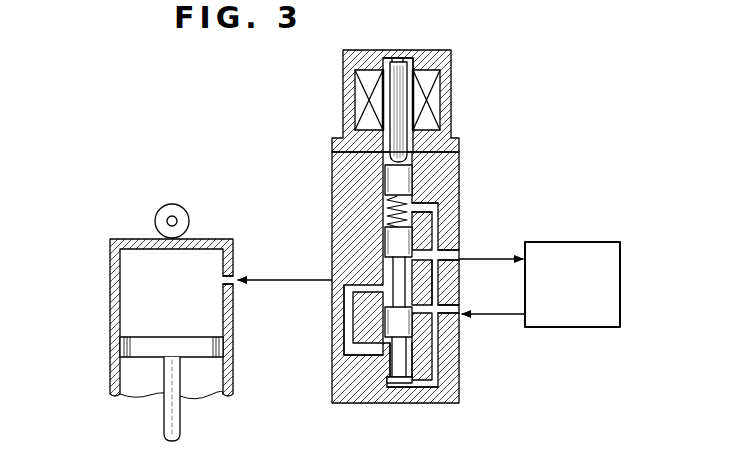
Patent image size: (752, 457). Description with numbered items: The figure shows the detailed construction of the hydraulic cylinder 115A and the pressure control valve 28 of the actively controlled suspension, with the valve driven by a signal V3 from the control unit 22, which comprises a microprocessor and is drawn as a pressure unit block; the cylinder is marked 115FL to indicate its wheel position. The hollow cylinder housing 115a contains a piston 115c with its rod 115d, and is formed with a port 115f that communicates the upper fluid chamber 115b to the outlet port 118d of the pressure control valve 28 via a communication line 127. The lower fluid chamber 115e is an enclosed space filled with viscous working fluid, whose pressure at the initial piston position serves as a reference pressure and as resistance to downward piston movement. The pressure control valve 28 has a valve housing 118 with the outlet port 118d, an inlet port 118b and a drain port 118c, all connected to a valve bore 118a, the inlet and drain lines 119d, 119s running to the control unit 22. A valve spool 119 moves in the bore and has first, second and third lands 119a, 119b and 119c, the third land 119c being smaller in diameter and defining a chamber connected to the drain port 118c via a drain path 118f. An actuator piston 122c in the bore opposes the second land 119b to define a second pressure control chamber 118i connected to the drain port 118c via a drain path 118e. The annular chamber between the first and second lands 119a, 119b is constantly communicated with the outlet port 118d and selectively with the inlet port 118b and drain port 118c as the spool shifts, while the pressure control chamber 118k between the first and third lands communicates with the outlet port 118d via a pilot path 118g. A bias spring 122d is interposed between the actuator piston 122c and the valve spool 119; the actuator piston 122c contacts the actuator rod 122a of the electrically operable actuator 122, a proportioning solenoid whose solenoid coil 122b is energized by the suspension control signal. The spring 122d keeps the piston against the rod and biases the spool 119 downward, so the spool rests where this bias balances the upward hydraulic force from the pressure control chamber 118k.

The control unit 22 is at (562, 242).
The pressure control valve 28 is at (466, 349).
The hollow cylinder housing 115a is at (115, 310).
The upper fluid chamber 115b is at (128, 272).
The hydraulic cylinder 115A is at (110, 347).
The piston 115c is at (218, 348).
The upper fluid chamber 115d is at (180, 420).
The lower fluid chamber 115e is at (128, 392).
The port 115f is at (236, 264).
The front-left / rear-right wheel cylinder 115FL is at (196, 209).
The valve housing 118 is at (335, 403).
The valve bore 118a is at (383, 186).
The inlet port 118b is at (447, 318).
The drain port 118c is at (458, 238).
The outlet port 118d is at (383, 262).
The drain path 118e is at (440, 207).
The drain path 118f is at (432, 399).
The pilot path 118g is at (363, 352).
The second pressure control chamber 118i is at (455, 176).
The pressure control chamber 118k is at (392, 388).
The valve spool 119 is at (392, 331).
The first land 119a is at (388, 315).
The second land 119b is at (387, 242).
The third land 119c is at (385, 378).
The supply line 119d is at (491, 272).
The return line 119s is at (493, 301).
The electrically operable actuator 122 is at (452, 80).
The actuator rod 122a is at (405, 147).
The solenoid coil 122b is at (425, 72).
The actuator piston 122c is at (336, 156).
The bias spring 122d is at (388, 212).
The communication line 127 is at (262, 283).
The control voltage signal V3 is at (341, 84).